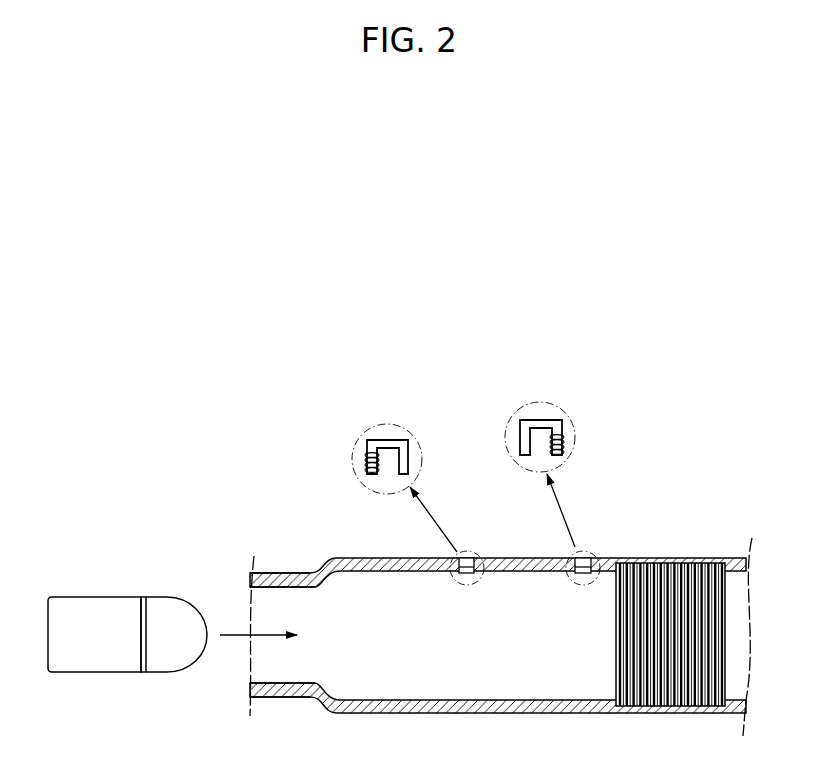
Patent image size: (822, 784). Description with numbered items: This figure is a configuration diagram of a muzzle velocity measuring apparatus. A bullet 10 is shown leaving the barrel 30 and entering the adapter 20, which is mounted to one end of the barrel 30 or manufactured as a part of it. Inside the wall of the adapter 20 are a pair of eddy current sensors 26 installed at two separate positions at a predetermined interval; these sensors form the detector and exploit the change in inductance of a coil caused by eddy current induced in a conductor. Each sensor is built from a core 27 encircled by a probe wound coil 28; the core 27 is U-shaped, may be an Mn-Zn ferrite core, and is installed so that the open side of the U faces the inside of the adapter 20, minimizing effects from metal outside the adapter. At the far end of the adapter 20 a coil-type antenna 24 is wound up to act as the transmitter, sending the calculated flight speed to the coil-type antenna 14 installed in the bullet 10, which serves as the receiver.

The bullet 10 is at (85, 597).
The coil-type antenna 14 is at (141, 672).
The adapter 20 is at (531, 557).
The coil-type antenna 24 is at (670, 562).
The eddy current sensor 26 is at (467, 558).
The core 27 is at (384, 441).
The probe wound coil 28 is at (366, 468).
The barrel 30 is at (281, 573).